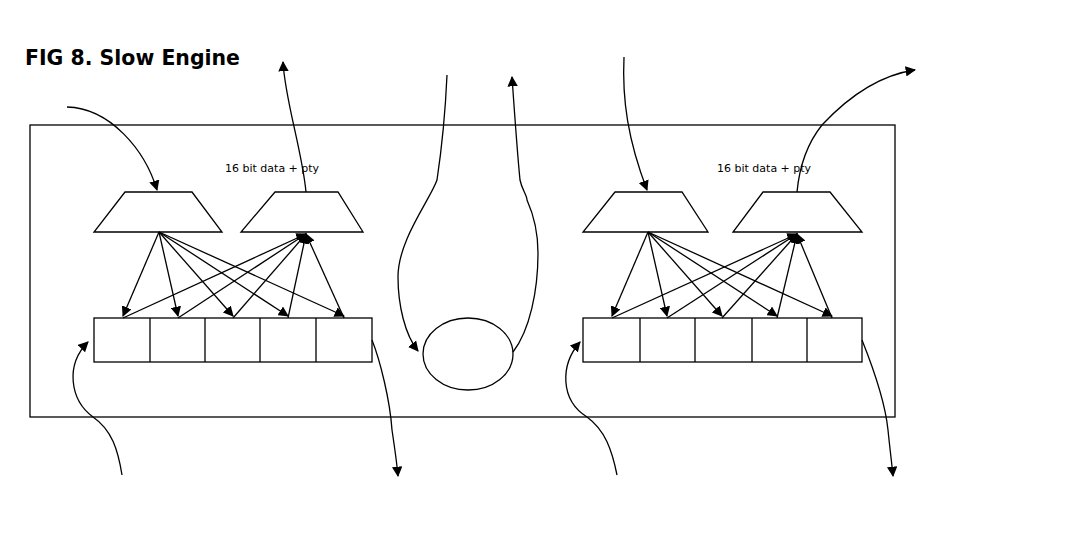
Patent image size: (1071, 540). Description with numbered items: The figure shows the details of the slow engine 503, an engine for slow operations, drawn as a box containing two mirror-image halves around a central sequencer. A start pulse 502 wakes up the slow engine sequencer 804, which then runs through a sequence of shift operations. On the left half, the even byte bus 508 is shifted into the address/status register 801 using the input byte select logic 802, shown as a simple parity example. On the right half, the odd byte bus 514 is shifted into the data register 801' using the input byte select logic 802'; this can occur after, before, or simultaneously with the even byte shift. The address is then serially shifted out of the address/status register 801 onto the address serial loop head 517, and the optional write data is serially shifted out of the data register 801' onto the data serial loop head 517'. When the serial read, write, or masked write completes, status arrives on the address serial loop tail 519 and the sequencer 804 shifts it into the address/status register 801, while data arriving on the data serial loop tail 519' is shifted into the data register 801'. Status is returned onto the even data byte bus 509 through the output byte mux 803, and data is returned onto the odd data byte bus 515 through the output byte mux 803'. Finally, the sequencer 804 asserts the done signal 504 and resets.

The slow engine 503 is at (463, 124).
The address/status register 801 is at (203, 316).
The input byte select logic 802 is at (132, 200).
The output byte mux 803 is at (333, 199).
The slow engine sequencer 804 is at (468, 316).
The data register 801' is at (703, 307).
The input byte select logic 802' is at (627, 194).
The output byte mux 803' is at (809, 194).
The start pulse 502 is at (441, 105).
The done signal 504 is at (520, 111).
The even byte bus 508 is at (115, 118).
The even data byte bus 509 is at (290, 93).
The odd byte bus 514 is at (628, 85).
The odd data byte bus 515 is at (833, 105).
The address serial loop head 517 is at (334, 408).
The address serial loop tail 519 is at (145, 408).
The data serial loop head 517' is at (833, 408).
The data serial loop tail 519' is at (645, 410).